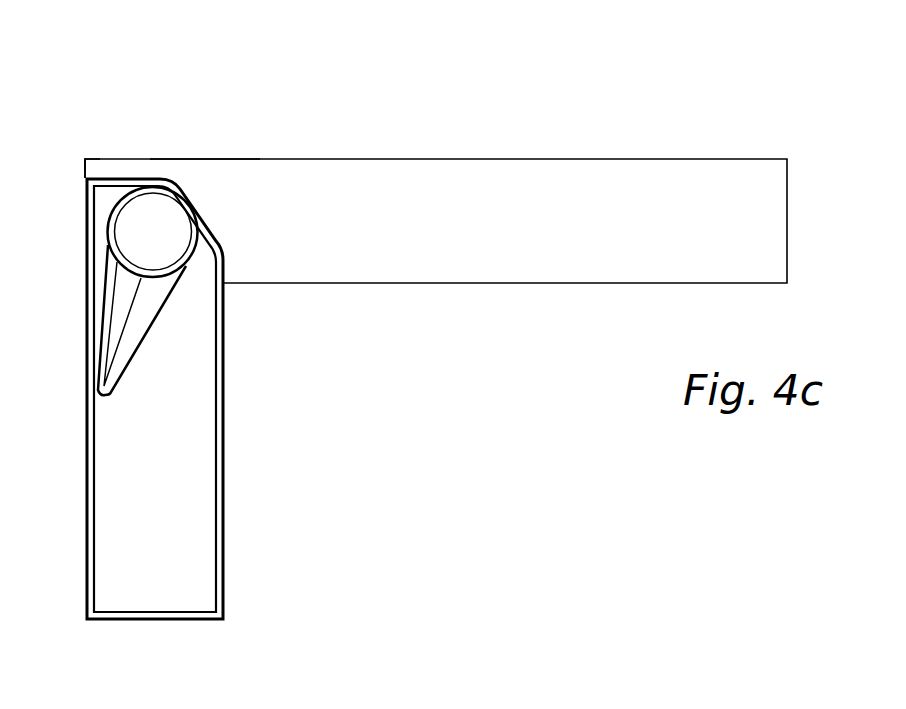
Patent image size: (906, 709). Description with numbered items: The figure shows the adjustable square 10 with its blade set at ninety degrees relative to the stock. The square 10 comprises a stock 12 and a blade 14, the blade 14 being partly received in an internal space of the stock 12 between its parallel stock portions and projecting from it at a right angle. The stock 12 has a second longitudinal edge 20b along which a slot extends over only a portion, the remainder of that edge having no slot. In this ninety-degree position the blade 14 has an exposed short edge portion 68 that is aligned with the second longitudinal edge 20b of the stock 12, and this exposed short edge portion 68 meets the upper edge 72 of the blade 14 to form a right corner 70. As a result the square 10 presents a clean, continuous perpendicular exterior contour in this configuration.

The square 10 is at (410, 403).
The stock 12 is at (224, 533).
The blade 14 is at (417, 190).
The second longitudinal edge 20b is at (85, 407).
The exposed short edge portion 68 is at (84, 167).
The right corner 70 is at (84, 158).
The upper edge 72 is at (192, 158).